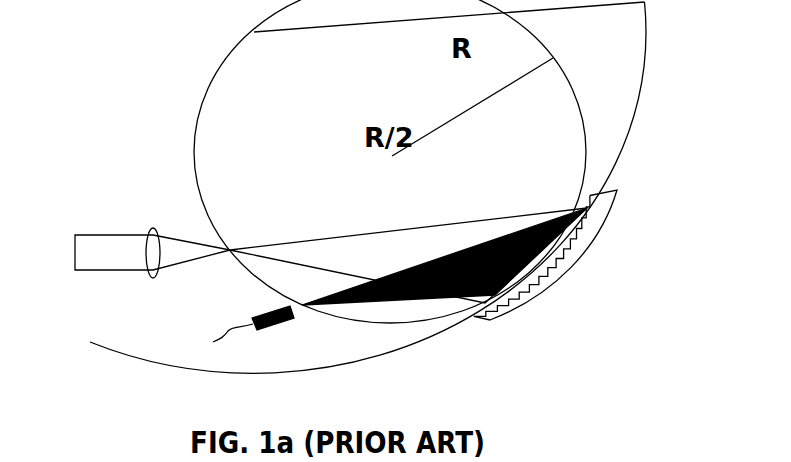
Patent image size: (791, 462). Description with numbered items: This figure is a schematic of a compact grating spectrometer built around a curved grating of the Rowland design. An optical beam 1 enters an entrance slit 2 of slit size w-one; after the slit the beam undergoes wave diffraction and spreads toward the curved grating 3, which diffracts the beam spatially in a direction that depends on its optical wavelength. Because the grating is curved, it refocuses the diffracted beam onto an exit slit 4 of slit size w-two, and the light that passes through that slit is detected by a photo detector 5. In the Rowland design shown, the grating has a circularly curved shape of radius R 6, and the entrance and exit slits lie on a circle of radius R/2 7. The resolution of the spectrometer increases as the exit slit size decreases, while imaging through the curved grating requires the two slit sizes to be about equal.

The optical beam 1 is at (317, 255).
The entrance slit 2 is at (177, 246).
The curved grating 3 is at (545, 255).
The exit slit 4 is at (273, 333).
The photo detector 5 is at (233, 349).
The radius R 6 is at (368, 187).
The circle of radius R/2 7 is at (376, 161).